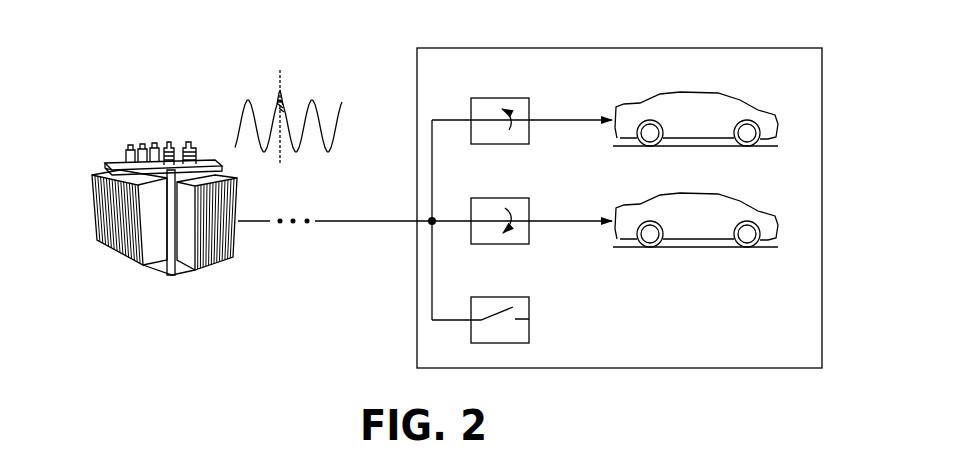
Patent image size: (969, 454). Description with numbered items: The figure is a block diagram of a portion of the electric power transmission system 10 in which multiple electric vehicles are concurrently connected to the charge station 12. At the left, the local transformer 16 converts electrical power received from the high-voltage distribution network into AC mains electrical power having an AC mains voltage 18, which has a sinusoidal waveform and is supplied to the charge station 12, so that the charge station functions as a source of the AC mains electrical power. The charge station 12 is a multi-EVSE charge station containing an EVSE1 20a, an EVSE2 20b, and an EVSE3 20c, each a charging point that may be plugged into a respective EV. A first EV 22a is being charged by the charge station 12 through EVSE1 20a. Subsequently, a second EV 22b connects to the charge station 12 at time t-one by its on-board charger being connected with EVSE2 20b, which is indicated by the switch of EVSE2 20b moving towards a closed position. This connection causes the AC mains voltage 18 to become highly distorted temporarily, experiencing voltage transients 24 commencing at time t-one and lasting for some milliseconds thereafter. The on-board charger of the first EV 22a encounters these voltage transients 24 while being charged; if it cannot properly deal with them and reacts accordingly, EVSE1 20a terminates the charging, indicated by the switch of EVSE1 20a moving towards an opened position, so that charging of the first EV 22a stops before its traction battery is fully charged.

The electric power transmission system 10 is at (265, 53).
The charge station 12 is at (413, 323).
The local transformer 16 is at (95, 209).
The AC mains voltage 18 is at (320, 115).
The EVSE1 20a is at (530, 110).
The EVSE2 20b is at (530, 210).
The EVSE3 20c is at (530, 334).
The first EV 22a is at (688, 90).
The second EV 22b is at (695, 203).
The voltage transients 24 is at (283, 97).